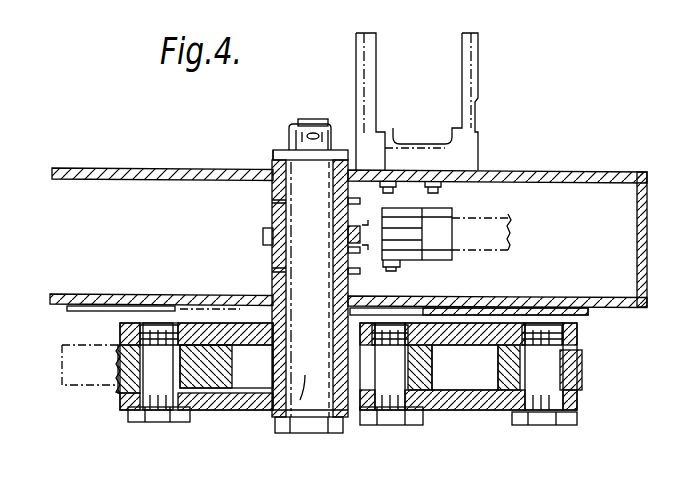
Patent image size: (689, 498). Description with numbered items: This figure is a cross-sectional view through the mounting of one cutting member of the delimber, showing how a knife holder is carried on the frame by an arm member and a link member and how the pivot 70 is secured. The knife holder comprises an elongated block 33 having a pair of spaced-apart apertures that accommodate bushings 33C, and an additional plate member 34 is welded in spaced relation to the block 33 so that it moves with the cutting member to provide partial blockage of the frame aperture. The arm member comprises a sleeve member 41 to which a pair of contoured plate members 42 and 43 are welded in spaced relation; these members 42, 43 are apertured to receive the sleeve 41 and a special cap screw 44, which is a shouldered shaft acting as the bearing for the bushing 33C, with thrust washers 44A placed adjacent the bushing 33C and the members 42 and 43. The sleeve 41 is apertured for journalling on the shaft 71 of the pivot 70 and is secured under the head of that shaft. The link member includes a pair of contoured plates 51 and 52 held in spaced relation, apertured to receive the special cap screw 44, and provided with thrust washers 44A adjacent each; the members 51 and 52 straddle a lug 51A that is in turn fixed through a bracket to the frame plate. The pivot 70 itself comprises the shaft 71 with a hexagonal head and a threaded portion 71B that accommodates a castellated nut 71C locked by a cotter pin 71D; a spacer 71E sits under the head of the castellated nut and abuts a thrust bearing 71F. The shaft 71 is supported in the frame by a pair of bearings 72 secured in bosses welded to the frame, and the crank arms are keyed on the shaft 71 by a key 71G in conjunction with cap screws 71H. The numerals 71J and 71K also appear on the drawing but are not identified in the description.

The elongated block 33 is at (210, 382).
The bushing 33C is at (128, 397).
The plate member 34 is at (88, 344).
The sleeve member 41 is at (283, 420).
The member of arm member 42 is at (252, 340).
The member of arm member 43 is at (246, 400).
The special cap screw 44 is at (155, 422).
The thrust washer 44A is at (118, 345).
The member of link member 51 is at (483, 405).
The lug 51A is at (582, 367).
The member of link member 52 is at (490, 330).
The pivot 70 is at (311, 410).
The shaft 71 is at (283, 400).
The threaded portion 71B is at (330, 118).
The castellated nut 71C is at (330, 138).
The cotter pin 71D is at (313, 125).
The spacer 71E is at (287, 148).
The thrust bearing 71F is at (288, 150).
The key 71G is at (330, 186).
The cap screw 71H is at (358, 204).
The thread 71J is at (328, 380).
The fastening nut 71K is at (372, 427).
The bearing 72 is at (283, 180).